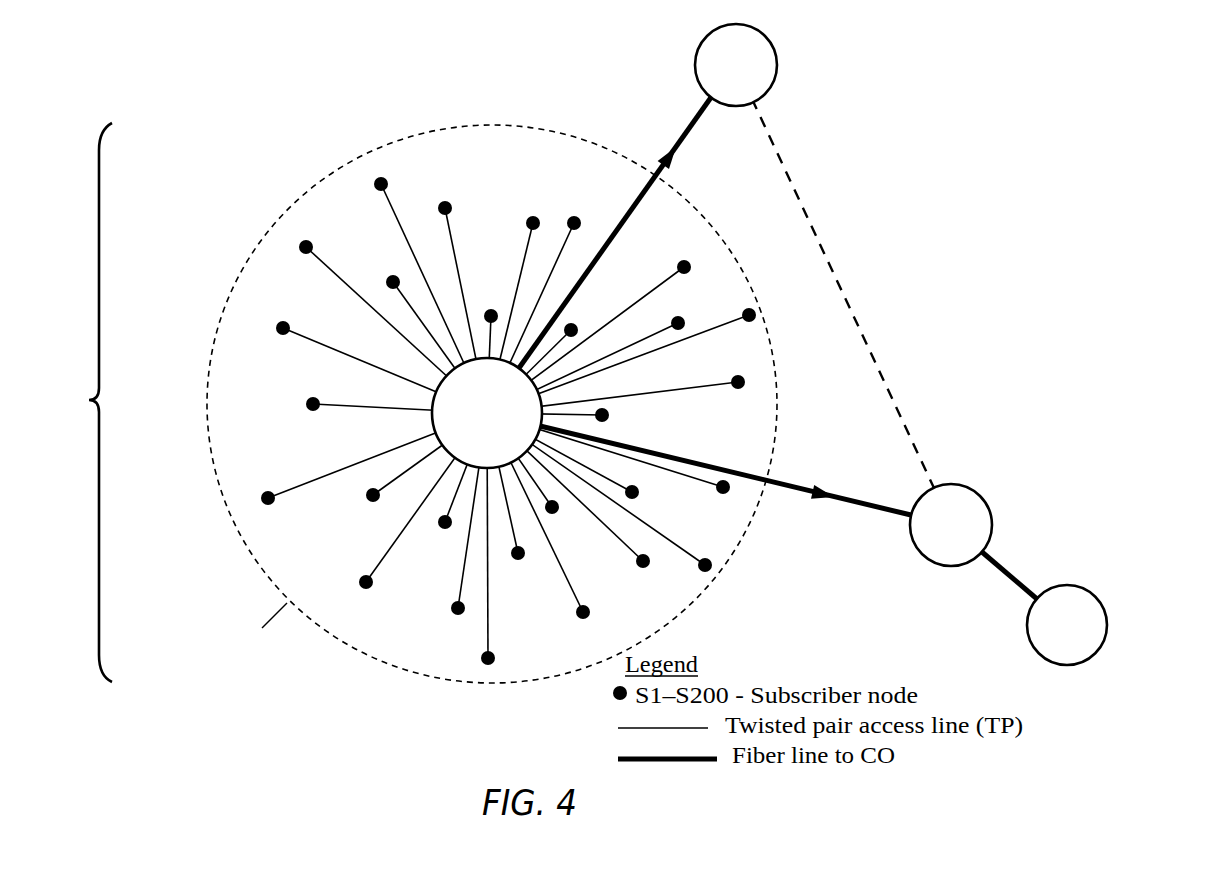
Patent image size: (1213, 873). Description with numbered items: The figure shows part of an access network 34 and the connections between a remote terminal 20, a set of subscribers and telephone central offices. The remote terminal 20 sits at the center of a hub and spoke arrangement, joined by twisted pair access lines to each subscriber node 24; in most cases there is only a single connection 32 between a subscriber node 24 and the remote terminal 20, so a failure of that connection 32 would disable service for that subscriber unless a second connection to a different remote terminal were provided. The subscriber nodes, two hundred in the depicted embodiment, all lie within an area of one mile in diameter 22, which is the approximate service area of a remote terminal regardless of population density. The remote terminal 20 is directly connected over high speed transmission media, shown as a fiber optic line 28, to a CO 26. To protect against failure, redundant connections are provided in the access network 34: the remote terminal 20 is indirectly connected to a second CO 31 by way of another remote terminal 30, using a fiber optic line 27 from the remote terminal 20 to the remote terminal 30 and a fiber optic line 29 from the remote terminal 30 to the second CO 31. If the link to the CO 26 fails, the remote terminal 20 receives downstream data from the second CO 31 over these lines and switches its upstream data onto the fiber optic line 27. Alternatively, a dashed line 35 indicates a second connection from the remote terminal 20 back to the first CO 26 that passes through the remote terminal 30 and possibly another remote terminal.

The remote terminal 20 is at (432, 412).
The area of one mile in diameter 22 is at (327, 182).
The subscriber node 24 is at (445, 208).
The CO 26 is at (779, 65).
The fiber optic line 27 is at (895, 513).
The fiber optic line 28 is at (698, 123).
The fiber optic line 29 is at (1013, 571).
The remote terminal 30 is at (993, 525).
The second CO 31 is at (1108, 625).
The connection 32 is at (687, 343).
The access network 34 is at (85, 402).
The dashed line 35 is at (832, 271).